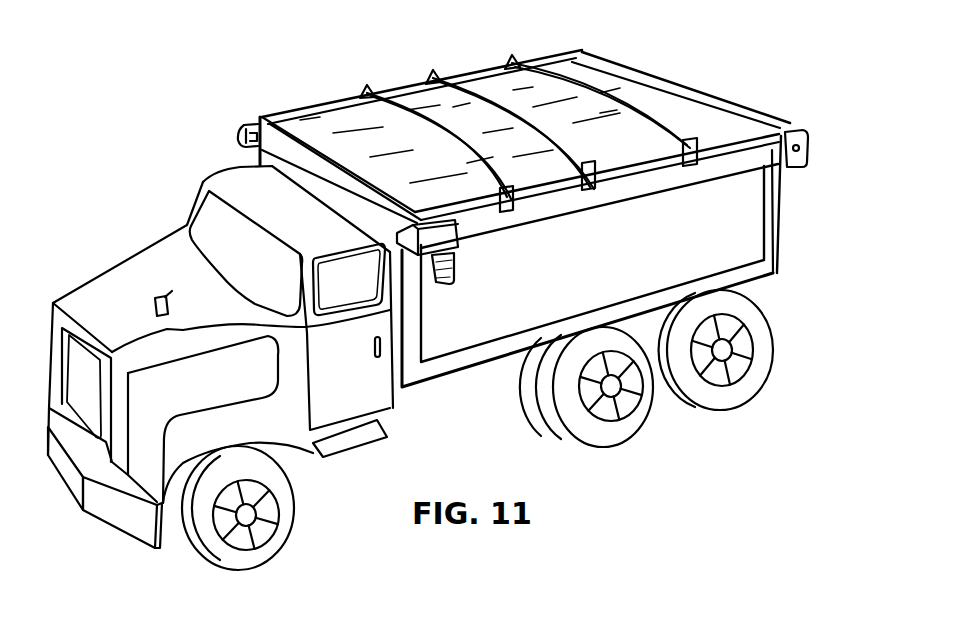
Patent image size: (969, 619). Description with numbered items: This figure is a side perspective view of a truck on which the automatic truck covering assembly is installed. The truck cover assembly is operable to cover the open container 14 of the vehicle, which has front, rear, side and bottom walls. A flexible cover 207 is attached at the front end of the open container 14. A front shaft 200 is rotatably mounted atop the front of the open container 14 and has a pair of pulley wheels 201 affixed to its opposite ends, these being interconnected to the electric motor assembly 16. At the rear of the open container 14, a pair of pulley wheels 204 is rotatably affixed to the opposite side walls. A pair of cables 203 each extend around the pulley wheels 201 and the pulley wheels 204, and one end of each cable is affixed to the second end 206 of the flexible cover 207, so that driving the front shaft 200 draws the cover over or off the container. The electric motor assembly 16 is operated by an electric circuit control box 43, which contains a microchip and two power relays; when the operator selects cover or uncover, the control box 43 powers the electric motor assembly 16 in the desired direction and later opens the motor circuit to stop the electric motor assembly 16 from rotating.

The open container 14 is at (710, 240).
The electric motor assembly 16 is at (433, 243).
The electric circuit control box 43 is at (167, 329).
The front shaft 200 is at (258, 161).
The pulley wheels 201 is at (233, 133).
The cables 203 is at (673, 188).
The pulley wheels 204 is at (810, 135).
The second end 206 is at (505, 62).
The flexible cover 207 is at (367, 140).